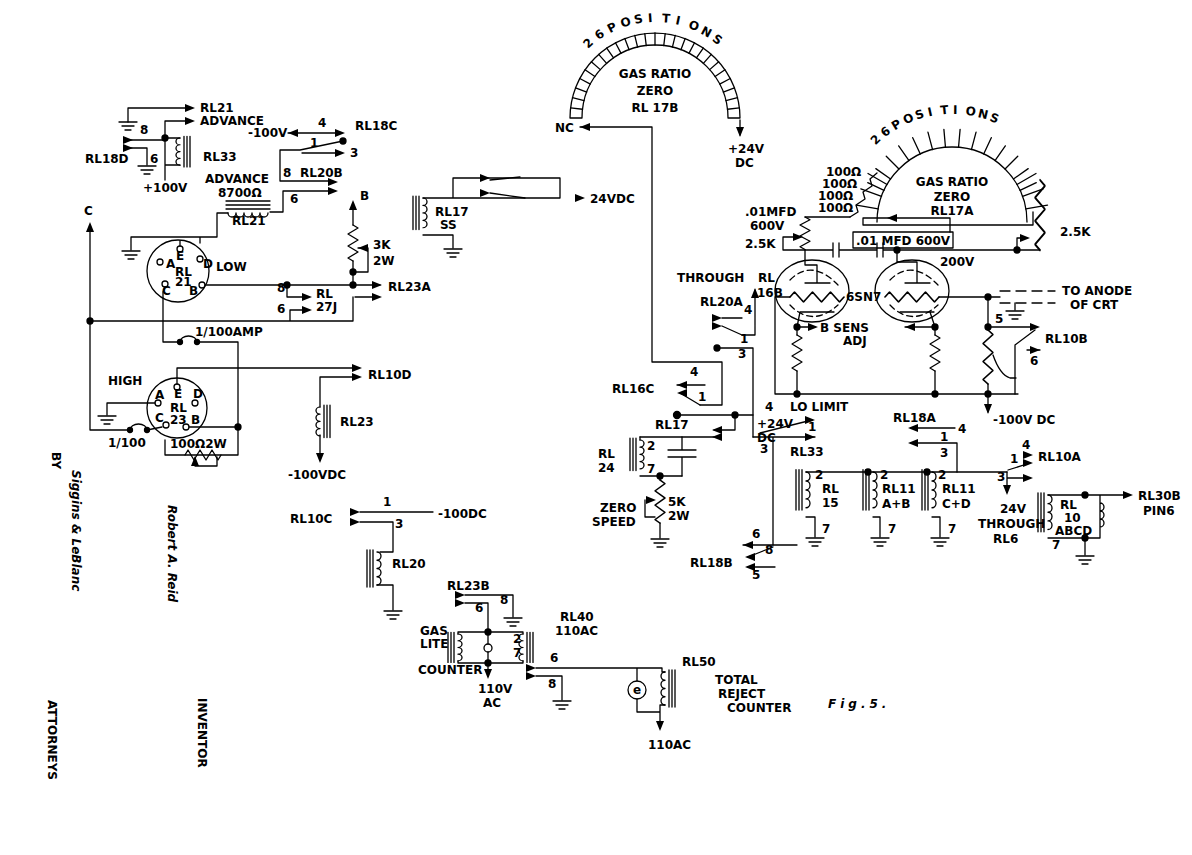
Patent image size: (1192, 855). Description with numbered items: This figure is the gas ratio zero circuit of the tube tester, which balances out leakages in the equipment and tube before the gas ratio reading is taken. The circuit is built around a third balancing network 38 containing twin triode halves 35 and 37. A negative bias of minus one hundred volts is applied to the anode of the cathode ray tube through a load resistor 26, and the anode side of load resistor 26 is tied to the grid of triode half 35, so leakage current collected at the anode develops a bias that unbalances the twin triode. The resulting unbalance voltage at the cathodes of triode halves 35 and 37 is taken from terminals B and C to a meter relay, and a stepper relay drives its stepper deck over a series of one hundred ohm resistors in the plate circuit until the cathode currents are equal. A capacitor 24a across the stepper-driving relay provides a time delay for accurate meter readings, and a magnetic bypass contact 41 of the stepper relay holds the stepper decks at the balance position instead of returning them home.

The magnetic bypass contact 41 is at (483, 207).
The triode half 37 is at (786, 268).
The third balancing network 38 is at (957, 276).
The triode half 35 is at (938, 329).
The load resistor 26 is at (986, 362).
The capacitor 24a is at (688, 462).